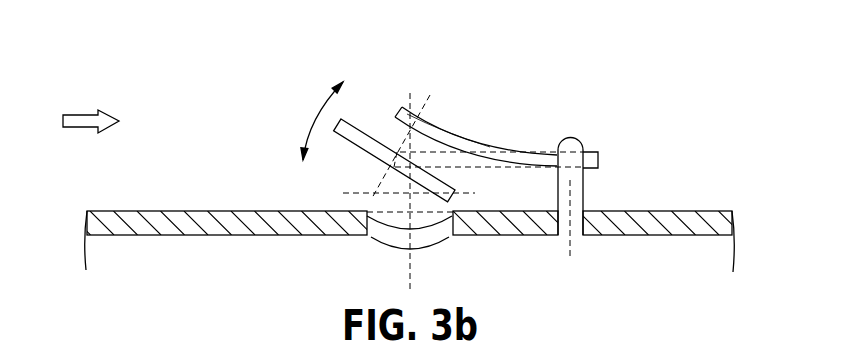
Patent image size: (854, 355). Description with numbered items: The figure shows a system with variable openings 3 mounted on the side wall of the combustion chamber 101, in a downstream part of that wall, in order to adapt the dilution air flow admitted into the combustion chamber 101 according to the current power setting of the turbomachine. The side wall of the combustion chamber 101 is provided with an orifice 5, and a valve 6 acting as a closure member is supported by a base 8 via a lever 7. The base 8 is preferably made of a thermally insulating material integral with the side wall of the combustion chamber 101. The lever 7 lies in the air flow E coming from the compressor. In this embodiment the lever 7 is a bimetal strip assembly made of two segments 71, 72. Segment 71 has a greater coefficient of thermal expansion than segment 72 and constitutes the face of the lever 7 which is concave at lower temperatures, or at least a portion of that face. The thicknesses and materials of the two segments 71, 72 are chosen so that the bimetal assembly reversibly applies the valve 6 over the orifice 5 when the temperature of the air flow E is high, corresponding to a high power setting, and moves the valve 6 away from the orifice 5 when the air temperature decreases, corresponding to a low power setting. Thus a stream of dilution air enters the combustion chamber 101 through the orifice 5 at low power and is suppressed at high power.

The system with variable openings 3 is at (468, 153).
The orifice 5 is at (437, 250).
The valve 6 is at (365, 131).
The lever 7 is at (496, 109).
The segment of the bimetal strip assembly 71 is at (560, 127).
The segment of the bimetal strip assembly 72 is at (538, 158).
The base 8 is at (583, 192).
The combustion chamber 101 is at (698, 275).
The air flow E is at (82, 113).